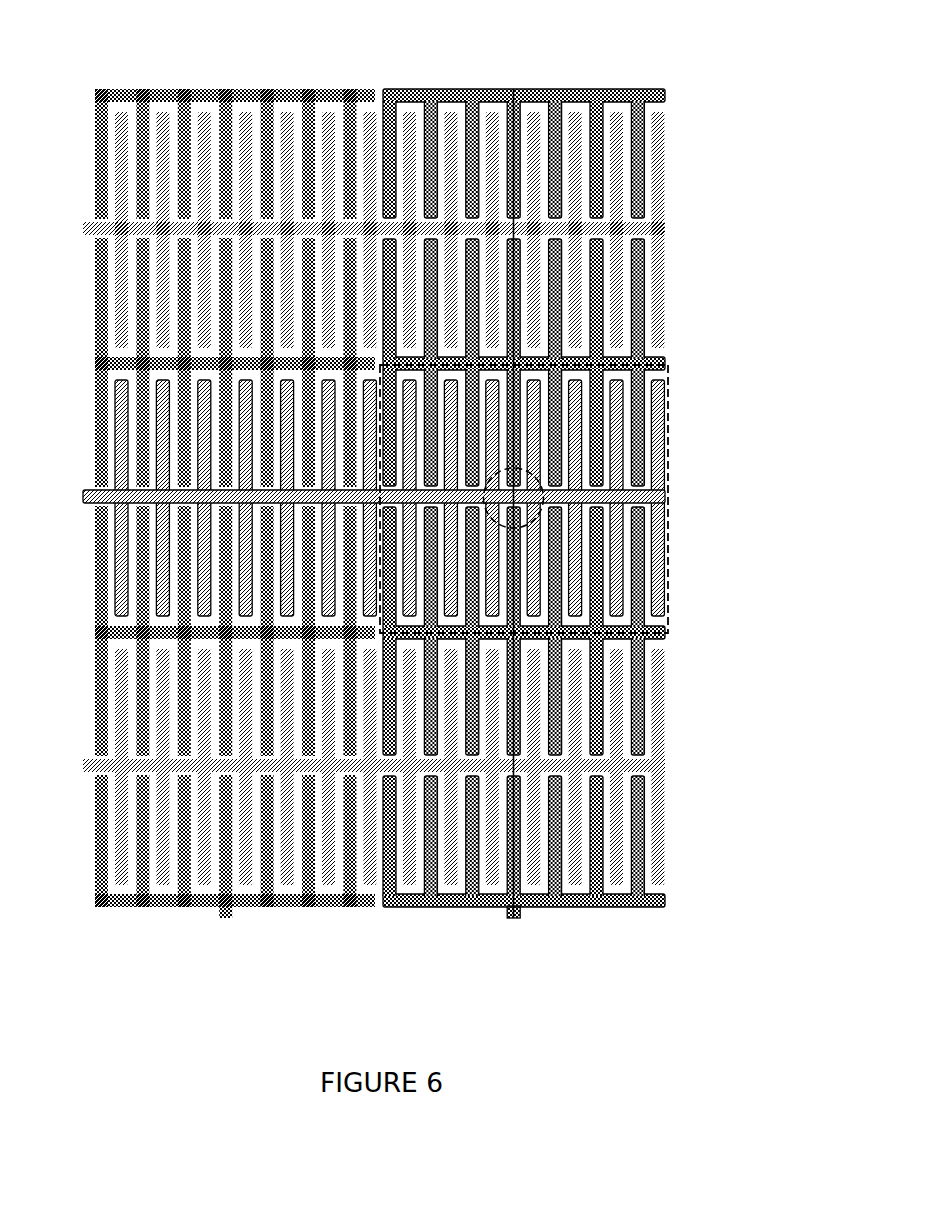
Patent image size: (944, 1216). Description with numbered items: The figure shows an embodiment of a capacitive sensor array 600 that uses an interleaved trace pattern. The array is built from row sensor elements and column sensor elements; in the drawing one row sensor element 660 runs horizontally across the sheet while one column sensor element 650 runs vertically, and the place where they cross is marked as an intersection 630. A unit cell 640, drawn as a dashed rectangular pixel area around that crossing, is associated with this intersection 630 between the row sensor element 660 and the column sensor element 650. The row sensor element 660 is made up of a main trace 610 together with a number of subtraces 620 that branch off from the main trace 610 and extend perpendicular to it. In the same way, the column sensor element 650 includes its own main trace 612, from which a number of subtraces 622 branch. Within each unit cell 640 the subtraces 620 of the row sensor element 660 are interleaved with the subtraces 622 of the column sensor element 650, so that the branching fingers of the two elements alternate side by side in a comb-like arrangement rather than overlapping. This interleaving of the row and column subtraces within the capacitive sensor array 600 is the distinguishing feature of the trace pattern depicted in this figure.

The capacitive sensor array 600 is at (401, 547).
The main trace 610 is at (652, 492).
The main trace 612 is at (513, 650).
The subtraces 620 is at (620, 548).
The subtraces 622 is at (600, 598).
The intersection 630 is at (548, 497).
The unit cell 640 is at (672, 377).
The column sensor element 650 is at (582, 465).
The row sensor element 660 is at (401, 498).